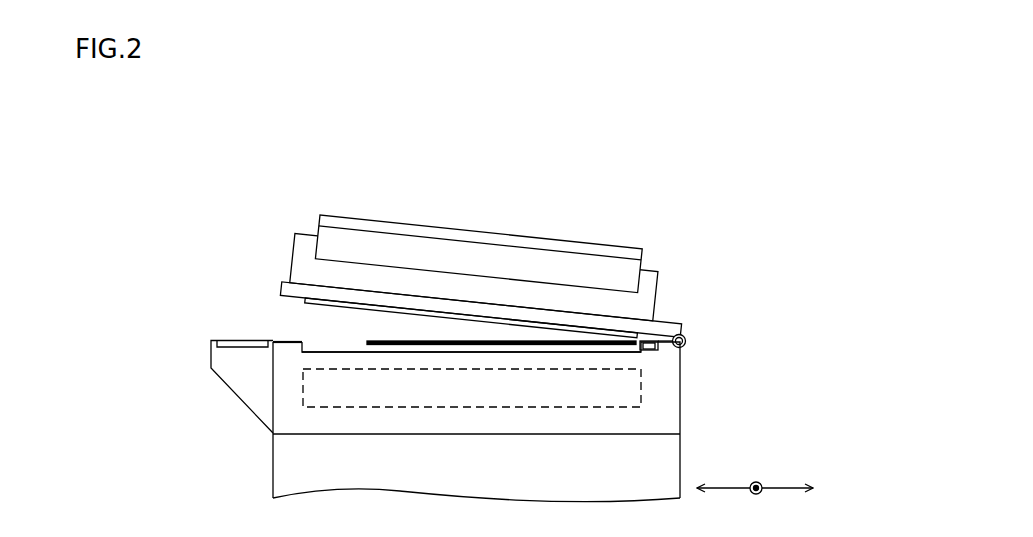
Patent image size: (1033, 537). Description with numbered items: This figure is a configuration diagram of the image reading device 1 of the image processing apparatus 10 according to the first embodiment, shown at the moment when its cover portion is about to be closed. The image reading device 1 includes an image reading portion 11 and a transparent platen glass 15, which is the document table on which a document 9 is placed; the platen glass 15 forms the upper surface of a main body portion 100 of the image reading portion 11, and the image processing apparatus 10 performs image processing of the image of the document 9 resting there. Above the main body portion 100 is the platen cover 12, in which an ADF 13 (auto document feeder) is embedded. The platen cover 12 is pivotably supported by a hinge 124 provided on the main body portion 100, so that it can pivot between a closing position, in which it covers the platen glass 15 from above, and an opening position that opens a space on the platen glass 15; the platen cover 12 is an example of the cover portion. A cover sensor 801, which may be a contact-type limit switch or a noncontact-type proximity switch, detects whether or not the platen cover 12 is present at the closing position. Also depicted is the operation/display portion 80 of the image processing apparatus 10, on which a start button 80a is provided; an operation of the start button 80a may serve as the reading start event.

The image processing apparatus 10 is at (750, 151).
The image reading device 1 is at (736, 222).
The ADF (Auto Document Feeder) 13 is at (622, 246).
The platen cover 12 is at (662, 288).
The hinge 124 is at (688, 343).
The cover sensor 801 is at (686, 346).
The platen glass 15 is at (634, 353).
The main body portion 100 is at (681, 410).
The image reading portion 11 is at (483, 408).
The document 9 is at (395, 341).
The operation/display portion 80 is at (218, 340).
The start button 80a is at (240, 341).